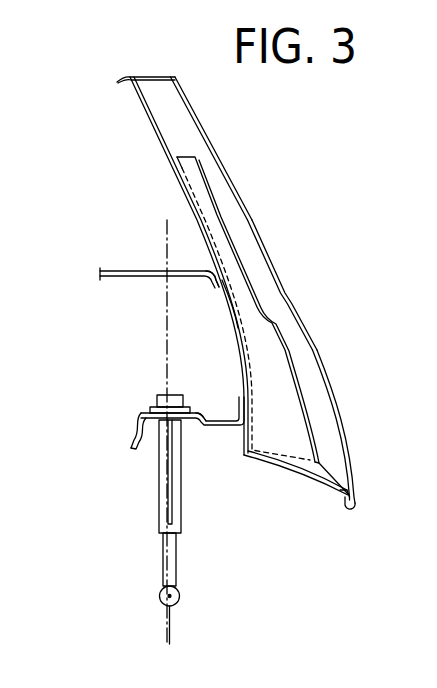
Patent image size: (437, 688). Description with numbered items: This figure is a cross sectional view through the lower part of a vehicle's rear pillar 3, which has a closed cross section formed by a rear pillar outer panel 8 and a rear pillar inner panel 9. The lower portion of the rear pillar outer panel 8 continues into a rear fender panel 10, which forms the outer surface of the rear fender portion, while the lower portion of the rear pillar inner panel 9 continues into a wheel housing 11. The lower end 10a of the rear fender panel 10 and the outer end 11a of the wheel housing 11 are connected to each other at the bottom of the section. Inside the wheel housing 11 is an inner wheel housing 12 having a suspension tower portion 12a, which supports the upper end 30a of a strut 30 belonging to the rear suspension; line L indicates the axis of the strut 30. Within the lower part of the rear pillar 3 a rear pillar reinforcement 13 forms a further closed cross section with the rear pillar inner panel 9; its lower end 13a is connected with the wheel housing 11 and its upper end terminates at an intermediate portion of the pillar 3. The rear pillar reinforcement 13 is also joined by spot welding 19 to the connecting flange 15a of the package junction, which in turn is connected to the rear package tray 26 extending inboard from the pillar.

The rear pillar 3 is at (224, 128).
The rear pillar outer panel 8 is at (240, 193).
The rear pillar inner panel 9 is at (167, 153).
The rear fender panel 10 is at (340, 403).
The lower end of the rear fender panel 10a is at (358, 504).
The wheel housing 11 is at (275, 463).
The outer end of the wheel housing 11a is at (340, 497).
The inner wheel housing 12 is at (228, 425).
The suspension tower portion 12a is at (198, 401).
The rear pillar reinforcement 13 is at (245, 267).
The lower end of the rear pillar reinforcement 13a is at (338, 468).
The connecting flange of the package junction 15a is at (227, 305).
The spot welding 19 is at (222, 301).
The rear package tray 26 is at (130, 270).
The strut 30 is at (159, 510).
The upper end of the strut 30a is at (143, 412).
The line L is at (163, 298).